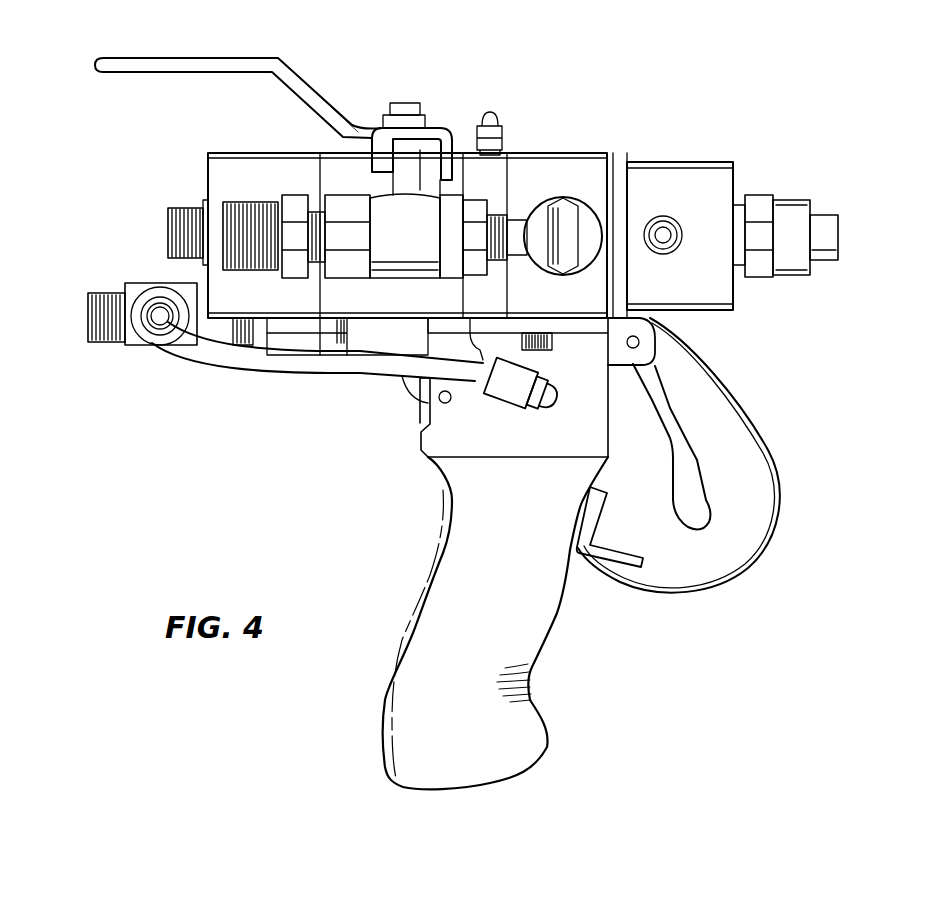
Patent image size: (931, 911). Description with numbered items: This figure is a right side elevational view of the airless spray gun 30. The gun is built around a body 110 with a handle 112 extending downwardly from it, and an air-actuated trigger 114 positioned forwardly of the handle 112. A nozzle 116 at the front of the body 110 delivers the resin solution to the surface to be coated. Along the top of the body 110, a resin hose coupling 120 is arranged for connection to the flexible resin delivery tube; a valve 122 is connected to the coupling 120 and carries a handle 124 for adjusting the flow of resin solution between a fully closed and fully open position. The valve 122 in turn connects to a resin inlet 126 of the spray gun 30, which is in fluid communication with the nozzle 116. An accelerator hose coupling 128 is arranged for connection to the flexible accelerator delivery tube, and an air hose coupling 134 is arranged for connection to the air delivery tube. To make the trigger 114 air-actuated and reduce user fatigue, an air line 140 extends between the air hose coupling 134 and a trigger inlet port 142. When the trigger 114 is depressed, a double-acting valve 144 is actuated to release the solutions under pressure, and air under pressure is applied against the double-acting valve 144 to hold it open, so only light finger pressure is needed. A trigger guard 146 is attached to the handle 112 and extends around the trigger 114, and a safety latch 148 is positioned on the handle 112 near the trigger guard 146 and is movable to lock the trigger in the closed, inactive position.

The airless spray gun 30 is at (543, 85).
The body 110 is at (701, 147).
The handle 112 is at (420, 594).
The air-actuated trigger 114 is at (686, 460).
The nozzle 116 is at (785, 206).
The resin hose coupling 120 is at (252, 200).
The valve 122 is at (410, 272).
The handle 124 is at (215, 57).
The resin inlet 126 is at (576, 200).
The accelerator hose coupling 128 is at (167, 236).
The air hose coupling 134 is at (104, 300).
The air line 140 is at (262, 376).
The trigger inlet port 142 is at (544, 412).
The double-acting valve 144 is at (642, 437).
The trigger guard 146 is at (700, 586).
The safety latch 148 is at (606, 562).